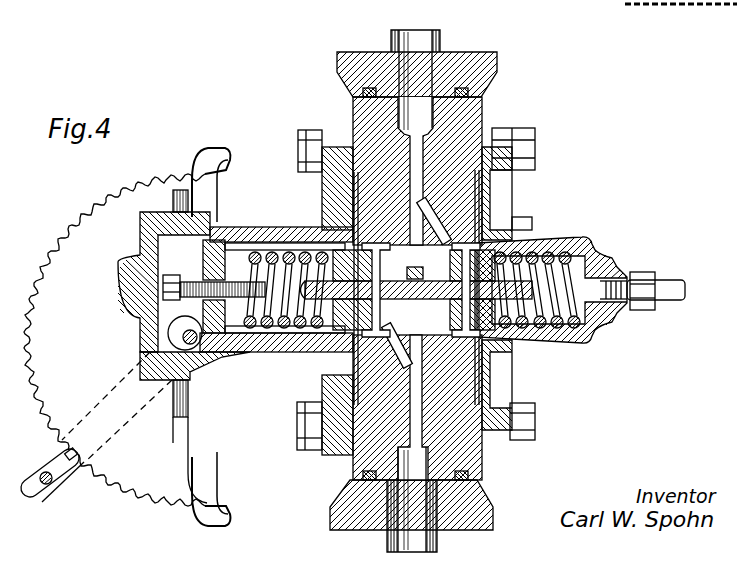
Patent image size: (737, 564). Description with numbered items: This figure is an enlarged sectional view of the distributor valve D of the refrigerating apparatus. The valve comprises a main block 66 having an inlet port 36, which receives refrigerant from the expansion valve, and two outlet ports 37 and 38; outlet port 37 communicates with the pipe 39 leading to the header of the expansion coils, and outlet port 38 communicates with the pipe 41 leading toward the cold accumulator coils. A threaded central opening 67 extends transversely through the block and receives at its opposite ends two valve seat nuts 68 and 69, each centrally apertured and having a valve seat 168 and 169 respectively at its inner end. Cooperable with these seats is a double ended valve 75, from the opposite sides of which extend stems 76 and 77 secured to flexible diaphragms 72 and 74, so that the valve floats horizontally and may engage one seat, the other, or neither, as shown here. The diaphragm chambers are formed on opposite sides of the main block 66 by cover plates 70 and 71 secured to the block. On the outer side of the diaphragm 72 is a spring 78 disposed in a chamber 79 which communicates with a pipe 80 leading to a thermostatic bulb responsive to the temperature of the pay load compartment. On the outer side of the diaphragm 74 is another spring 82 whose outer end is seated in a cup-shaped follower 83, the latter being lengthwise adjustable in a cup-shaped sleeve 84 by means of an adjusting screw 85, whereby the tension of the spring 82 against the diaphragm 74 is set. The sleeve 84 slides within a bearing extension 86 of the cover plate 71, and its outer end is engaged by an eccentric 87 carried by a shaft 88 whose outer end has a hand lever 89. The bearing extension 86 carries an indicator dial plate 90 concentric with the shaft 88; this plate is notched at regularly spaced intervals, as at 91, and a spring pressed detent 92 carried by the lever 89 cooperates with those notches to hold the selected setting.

The distributor valve D is at (352, 107).
The pipe 39 is at (405, 46).
The pipe 41 is at (437, 545).
The cover plate 71 is at (318, 150).
The flexible diaphragm 74 is at (342, 194).
The double ended valve 75 is at (325, 400).
The cover plate 70 is at (500, 196).
The outlet port 37 is at (486, 206).
The valve seat 168 is at (522, 226).
The flexible diaphragm 72 is at (514, 402).
The inlet port 36 is at (487, 372).
The central opening 67 is at (518, 356).
The main block 66 is at (482, 455).
The spring 78 is at (578, 250).
The chamber 79 is at (580, 340).
The pipe 80 is at (690, 288).
The valve seat nut 68 is at (528, 236).
The stem 76 is at (449, 290).
The stem 77 is at (391, 290).
The spring 82 is at (268, 240).
The cup-shaped follower 83 is at (228, 258).
The cup-shaped sleeve 84 is at (208, 238).
The bearing extension 86 is at (300, 342).
The adjusting screw 85 is at (186, 280).
The eccentric 87 is at (168, 334).
The shaft 88 is at (195, 345).
The valve seat 169 is at (318, 226).
The valve seat nut 69 is at (340, 358).
The outlet port 38 is at (350, 386).
The indicator dial plate 90 is at (82, 290).
The notches 91 is at (32, 392).
The hand lever 89 is at (44, 502).
The spring pressed detent 92 is at (64, 452).